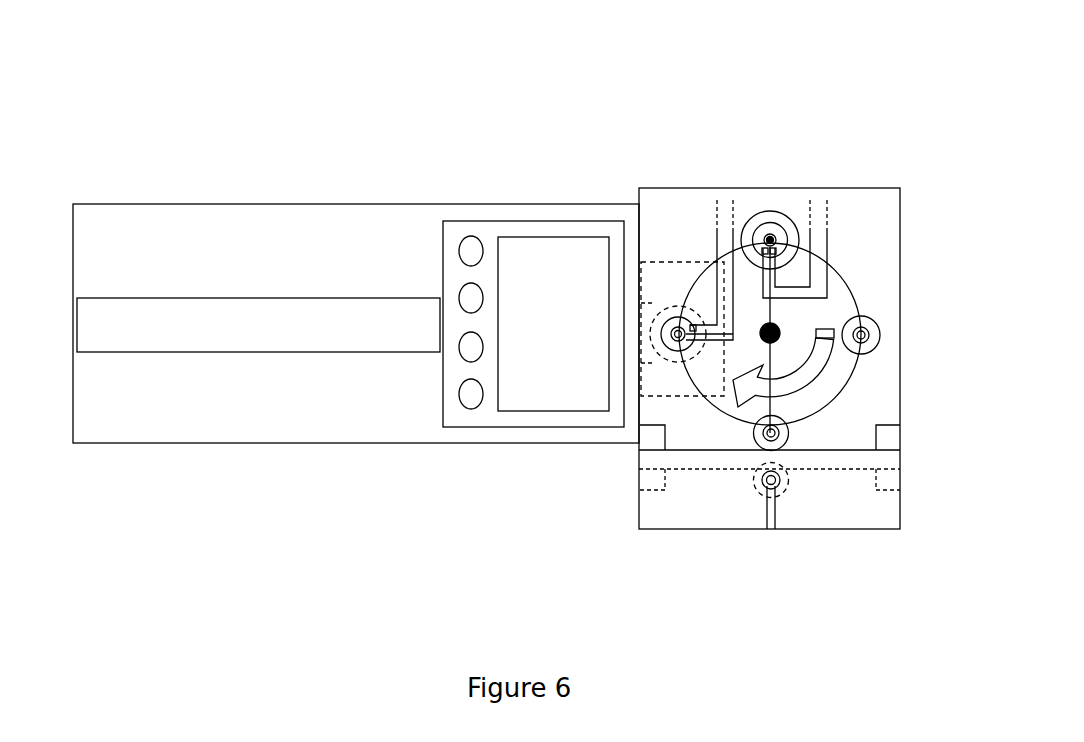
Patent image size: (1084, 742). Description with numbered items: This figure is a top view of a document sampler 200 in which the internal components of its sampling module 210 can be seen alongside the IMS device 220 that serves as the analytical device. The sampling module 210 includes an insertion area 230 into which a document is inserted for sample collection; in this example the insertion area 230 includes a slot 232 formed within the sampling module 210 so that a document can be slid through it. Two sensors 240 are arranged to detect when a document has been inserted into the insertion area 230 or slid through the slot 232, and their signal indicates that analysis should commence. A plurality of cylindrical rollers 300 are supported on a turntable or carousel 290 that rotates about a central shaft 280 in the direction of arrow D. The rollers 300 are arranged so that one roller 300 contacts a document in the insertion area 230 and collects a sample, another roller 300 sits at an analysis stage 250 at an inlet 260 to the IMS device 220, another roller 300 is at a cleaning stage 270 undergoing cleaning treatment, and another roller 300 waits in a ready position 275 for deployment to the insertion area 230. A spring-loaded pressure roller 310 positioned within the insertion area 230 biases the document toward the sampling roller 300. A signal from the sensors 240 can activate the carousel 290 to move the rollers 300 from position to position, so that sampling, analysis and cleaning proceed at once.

The document sampler 200 is at (298, 112).
The sampling module 210 is at (847, 168).
The IMS device 220 is at (548, 348).
The insertion area 230 is at (738, 470).
The slot 232 is at (802, 457).
The sensors 240 is at (652, 480).
The analysis stage 250 is at (673, 305).
The inlet 260 is at (648, 327).
The cleaning stage 270 is at (785, 209).
The ready position 275 is at (883, 343).
The central shaft 280 is at (778, 330).
The carousel 290 is at (835, 288).
The rollers 300 is at (760, 235).
The pressure roller 310 is at (778, 488).